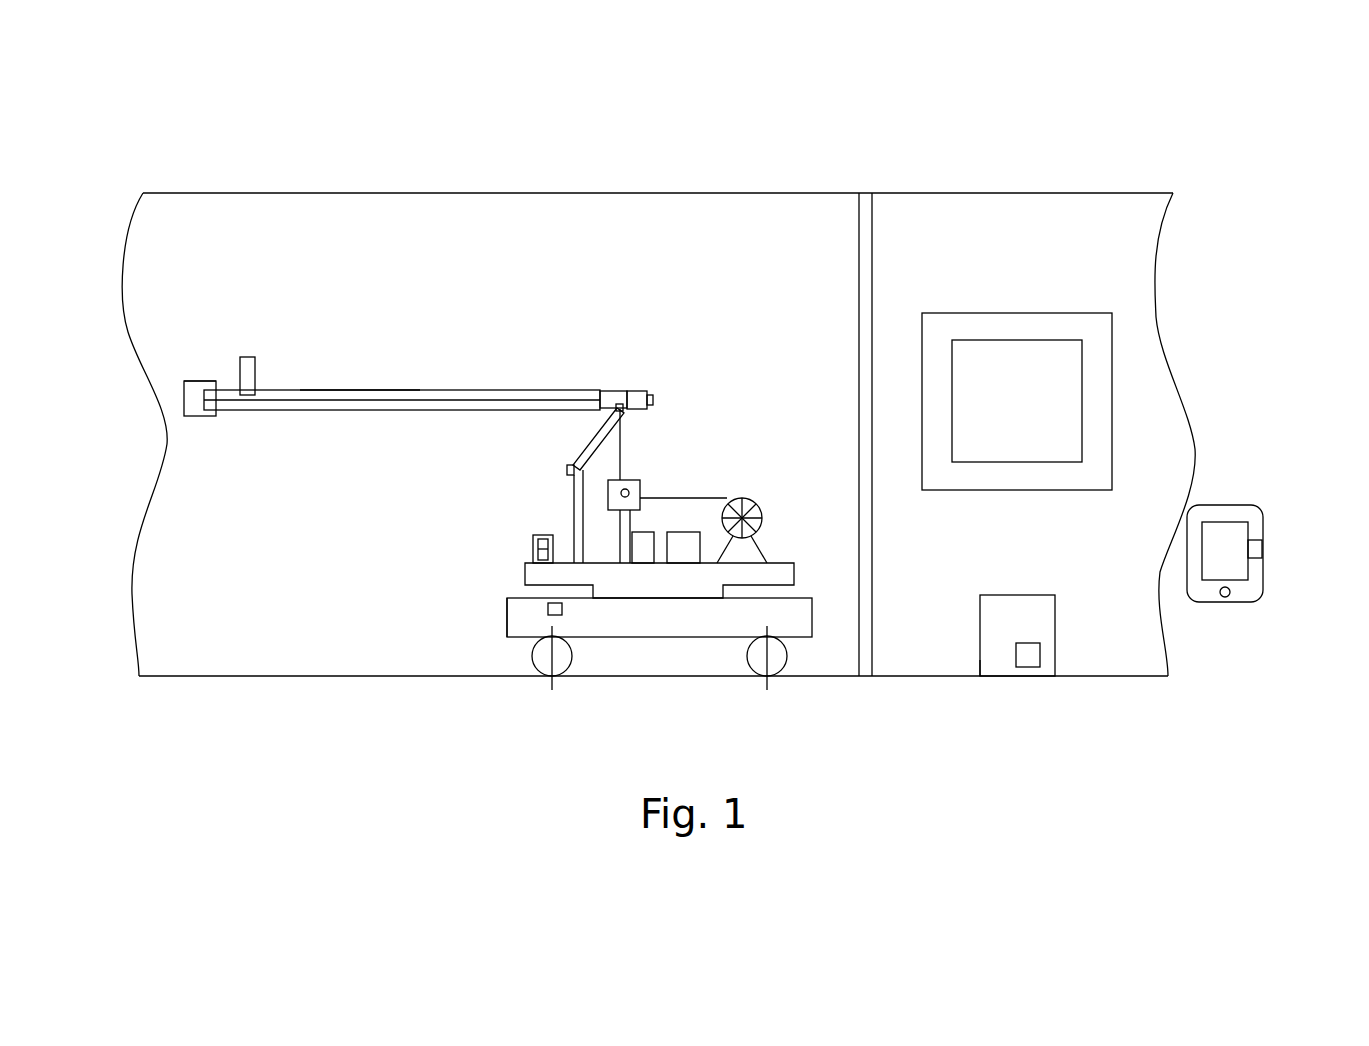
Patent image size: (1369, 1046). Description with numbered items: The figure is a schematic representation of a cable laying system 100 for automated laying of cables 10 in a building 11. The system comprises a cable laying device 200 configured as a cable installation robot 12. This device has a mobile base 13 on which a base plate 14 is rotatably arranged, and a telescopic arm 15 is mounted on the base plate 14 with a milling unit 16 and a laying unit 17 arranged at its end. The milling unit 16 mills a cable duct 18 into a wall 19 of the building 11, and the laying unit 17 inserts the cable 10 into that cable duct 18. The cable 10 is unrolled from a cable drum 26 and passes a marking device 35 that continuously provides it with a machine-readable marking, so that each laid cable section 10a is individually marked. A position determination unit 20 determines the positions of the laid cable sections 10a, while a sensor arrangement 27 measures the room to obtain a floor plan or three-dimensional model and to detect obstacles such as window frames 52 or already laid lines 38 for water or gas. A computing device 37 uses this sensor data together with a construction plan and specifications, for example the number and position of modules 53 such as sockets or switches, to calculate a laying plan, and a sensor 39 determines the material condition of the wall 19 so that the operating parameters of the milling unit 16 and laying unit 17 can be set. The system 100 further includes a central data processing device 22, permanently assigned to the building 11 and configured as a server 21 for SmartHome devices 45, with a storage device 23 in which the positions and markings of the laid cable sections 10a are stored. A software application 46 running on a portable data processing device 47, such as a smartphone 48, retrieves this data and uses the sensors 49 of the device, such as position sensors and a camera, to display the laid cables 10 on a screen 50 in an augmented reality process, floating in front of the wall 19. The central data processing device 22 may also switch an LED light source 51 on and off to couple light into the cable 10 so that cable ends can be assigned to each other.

The cable laying system 100 is at (122, 106).
The building 11 is at (1016, 158).
The wall 19 is at (160, 263).
The already laid lines 38 is at (873, 257).
The window frame 52 is at (1016, 322).
The central data processing device 22 is at (997, 655).
The storage device 23 is at (1027, 668).
The server 21 is at (980, 660).
The software application 46 is at (1206, 502).
The portable data processing device 47 is at (1249, 519).
The smartphone 48 is at (1228, 549).
The sensors 49 is at (1257, 553).
The screen 50 is at (1215, 575).
The laid cable sections 10a is at (432, 395).
The cable duct 18 is at (352, 390).
The LED light source 51 is at (245, 357).
The modules 53 is at (184, 403).
The SmartHome devices 45 is at (201, 381).
The milling unit 16 is at (632, 390).
The sensor 39 is at (650, 393).
The laying unit 17 is at (608, 390).
The marking device 35 is at (608, 495).
The cable 10 is at (707, 498).
The telescopic arm 15 is at (573, 497).
The sensor arrangement 27 is at (533, 538).
The computing device 37 is at (645, 552).
The position determination unit 20 is at (685, 552).
The cable drum 26 is at (757, 508).
The base plate 14 is at (525, 570).
The cable installation robot 12 is at (520, 637).
The mobile base 13 is at (615, 627).
The cable laying device 200 is at (507, 618).